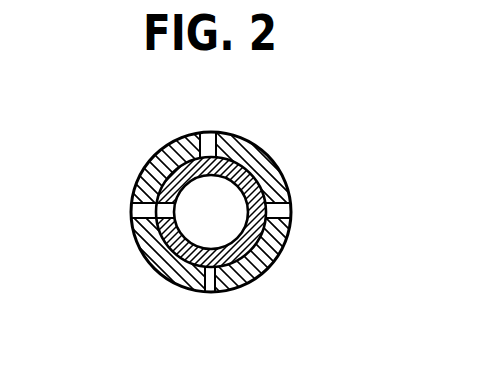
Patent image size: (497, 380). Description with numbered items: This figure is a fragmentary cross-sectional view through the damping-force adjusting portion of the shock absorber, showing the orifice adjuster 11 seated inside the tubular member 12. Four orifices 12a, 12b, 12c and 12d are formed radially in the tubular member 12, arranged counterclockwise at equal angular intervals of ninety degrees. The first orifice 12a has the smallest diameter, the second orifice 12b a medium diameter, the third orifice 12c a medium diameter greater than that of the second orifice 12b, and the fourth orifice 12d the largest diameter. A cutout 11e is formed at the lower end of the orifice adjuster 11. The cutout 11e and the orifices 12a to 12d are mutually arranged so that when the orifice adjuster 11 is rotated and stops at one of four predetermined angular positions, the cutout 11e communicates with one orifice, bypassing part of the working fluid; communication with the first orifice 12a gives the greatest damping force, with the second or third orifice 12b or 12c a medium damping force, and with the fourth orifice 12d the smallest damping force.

The tubular member 12 is at (268, 257).
The orifice adjuster 11 is at (257, 180).
The first orifice 12a is at (212, 274).
The second orifice 12b is at (290, 209).
The third orifice 12c is at (207, 132).
The fourth orifice 12d is at (135, 211).
The cutout 11e is at (162, 209).